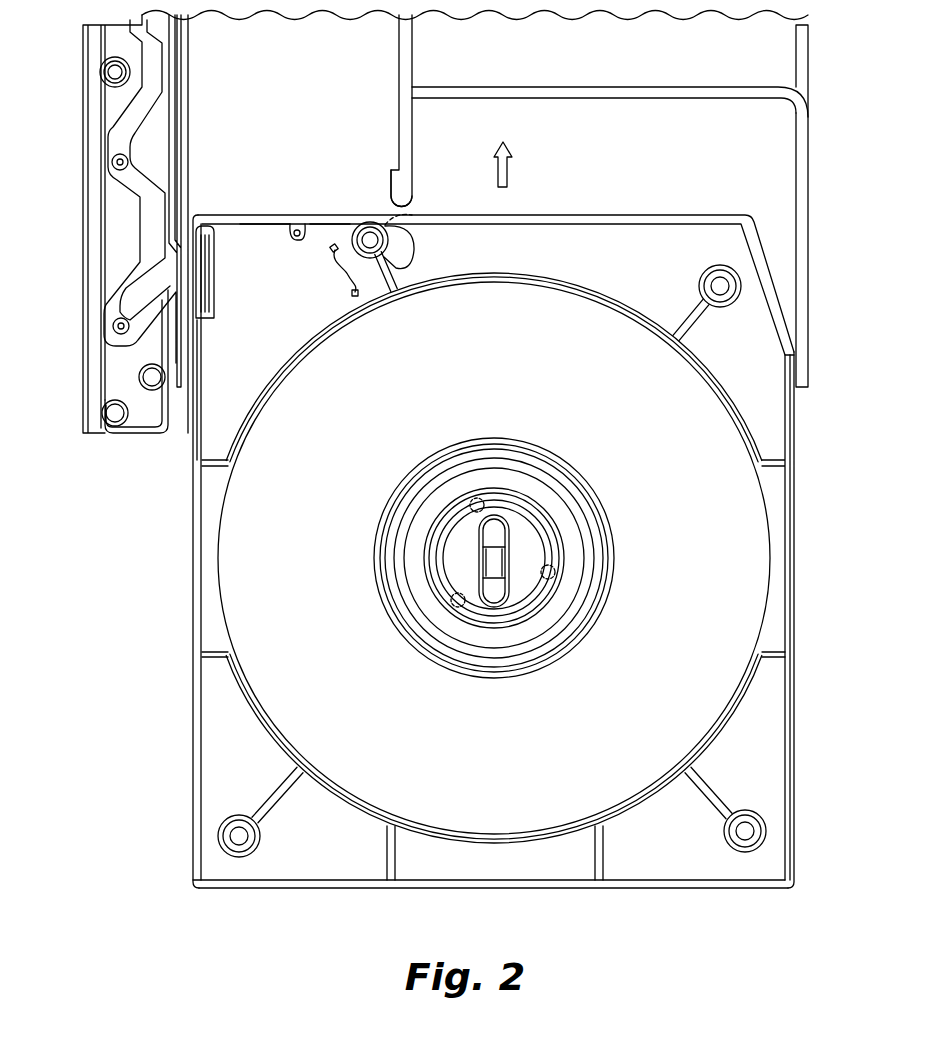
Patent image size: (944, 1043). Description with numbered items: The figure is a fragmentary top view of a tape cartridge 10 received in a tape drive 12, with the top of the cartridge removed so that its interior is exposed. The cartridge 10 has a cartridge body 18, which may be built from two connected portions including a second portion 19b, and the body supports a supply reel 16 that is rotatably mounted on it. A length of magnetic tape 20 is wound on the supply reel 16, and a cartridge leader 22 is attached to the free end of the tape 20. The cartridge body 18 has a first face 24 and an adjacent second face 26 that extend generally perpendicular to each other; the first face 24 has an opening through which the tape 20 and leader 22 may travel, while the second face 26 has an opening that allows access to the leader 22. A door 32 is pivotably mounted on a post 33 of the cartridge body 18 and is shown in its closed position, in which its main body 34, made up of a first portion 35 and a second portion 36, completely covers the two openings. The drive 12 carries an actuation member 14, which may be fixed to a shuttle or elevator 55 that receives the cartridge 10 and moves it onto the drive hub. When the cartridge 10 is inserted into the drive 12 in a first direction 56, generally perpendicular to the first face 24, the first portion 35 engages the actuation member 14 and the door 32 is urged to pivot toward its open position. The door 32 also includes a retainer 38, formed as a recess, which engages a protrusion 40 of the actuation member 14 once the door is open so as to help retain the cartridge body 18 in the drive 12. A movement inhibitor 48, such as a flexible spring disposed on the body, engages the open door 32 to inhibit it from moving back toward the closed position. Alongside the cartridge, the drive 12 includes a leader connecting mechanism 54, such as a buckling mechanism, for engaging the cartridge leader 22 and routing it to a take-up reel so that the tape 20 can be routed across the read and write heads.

The tape cartridge 10 is at (248, 922).
The tape drive 12 is at (808, 198).
The actuation member 14 is at (412, 147).
The supply reel 16 is at (613, 556).
The cartridge body 18 is at (795, 568).
The second portion 19b is at (795, 637).
The magnetic tape 20 is at (210, 490).
The cartridge leader 22 is at (207, 370).
The first face 24 is at (570, 213).
The second face 26 is at (193, 457).
The door 32 is at (267, 217).
The post 33 is at (355, 238).
The main body 34 is at (297, 217).
The first portion 35 is at (327, 217).
The second portion 36 is at (202, 265).
The retainer 38 is at (367, 219).
The protrusion 40 is at (393, 178).
The movement inhibitor 48 is at (350, 284).
The leader connecting mechanism 54 is at (93, 178).
The elevator 55 is at (678, 100).
The first direction 56 is at (508, 176).